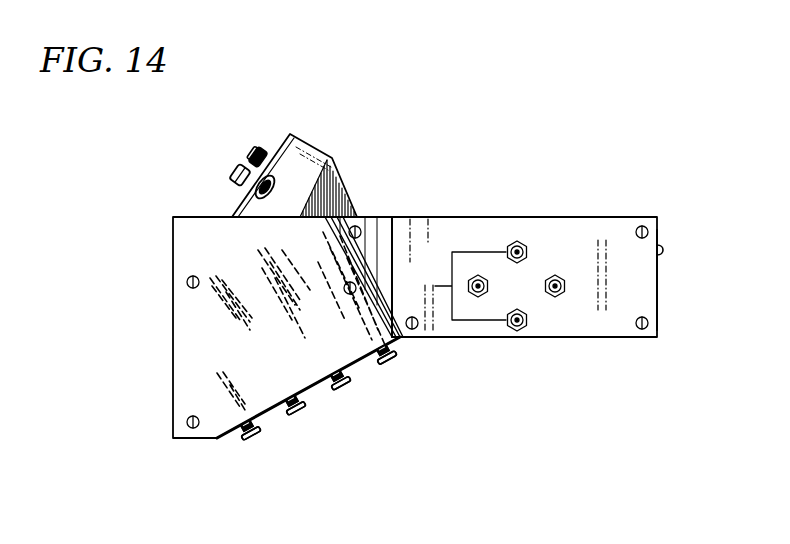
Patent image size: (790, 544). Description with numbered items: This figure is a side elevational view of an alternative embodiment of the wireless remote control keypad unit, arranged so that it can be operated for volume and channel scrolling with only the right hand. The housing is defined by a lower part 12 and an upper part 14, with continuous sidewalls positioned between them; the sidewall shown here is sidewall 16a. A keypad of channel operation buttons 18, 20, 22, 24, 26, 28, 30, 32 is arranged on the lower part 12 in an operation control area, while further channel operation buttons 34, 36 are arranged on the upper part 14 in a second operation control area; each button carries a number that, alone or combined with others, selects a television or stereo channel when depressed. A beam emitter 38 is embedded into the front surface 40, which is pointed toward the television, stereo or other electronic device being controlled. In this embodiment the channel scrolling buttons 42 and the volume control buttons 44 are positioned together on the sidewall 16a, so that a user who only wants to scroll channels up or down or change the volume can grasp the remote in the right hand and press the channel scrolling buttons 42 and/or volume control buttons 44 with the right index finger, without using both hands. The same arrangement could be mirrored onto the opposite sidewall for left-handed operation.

The lower part 12 is at (190, 440).
The upper part 14 is at (592, 218).
The sidewall 16a is at (641, 293).
The channel operation button 18 is at (255, 437).
The channel operation button 20 is at (258, 432).
The channel operation button 22 is at (293, 415).
The channel operation button 24 is at (300, 412).
The channel operation button 26 is at (340, 390).
The channel operation button 28 is at (345, 385).
The channel operation button 30 is at (387, 365).
The channel operation button 32 is at (393, 362).
The channel operation button 34 is at (267, 152).
The channel operation button 36 is at (240, 170).
The beam emitter 38 is at (665, 250).
The front surface 40 is at (657, 297).
The channel scrolling buttons 42 is at (435, 286).
The volume control buttons 44 is at (488, 290).